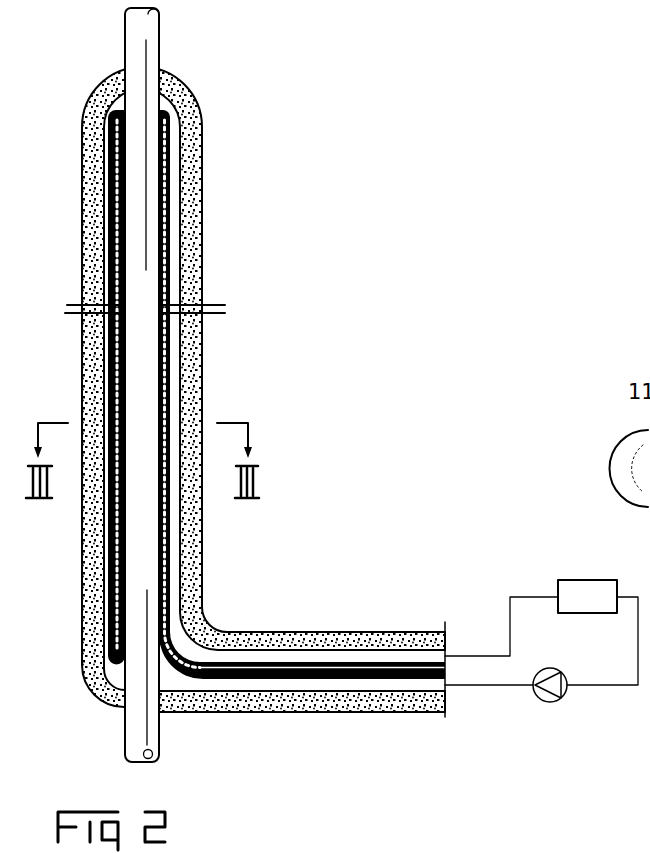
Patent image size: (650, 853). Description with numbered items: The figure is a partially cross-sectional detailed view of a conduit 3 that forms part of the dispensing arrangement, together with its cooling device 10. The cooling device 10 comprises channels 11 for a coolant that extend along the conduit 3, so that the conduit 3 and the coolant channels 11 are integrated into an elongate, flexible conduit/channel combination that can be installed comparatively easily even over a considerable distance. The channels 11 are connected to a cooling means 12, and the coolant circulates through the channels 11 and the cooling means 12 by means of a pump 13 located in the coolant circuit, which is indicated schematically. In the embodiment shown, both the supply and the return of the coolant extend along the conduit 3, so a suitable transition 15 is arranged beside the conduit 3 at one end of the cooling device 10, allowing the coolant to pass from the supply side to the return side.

The conduit 3 is at (135, 738).
The cooling device 10 is at (246, 380).
The channels 11 is at (109, 180).
The cooling means 12 is at (575, 593).
The pump 13 is at (547, 698).
The transition 15 is at (170, 93).